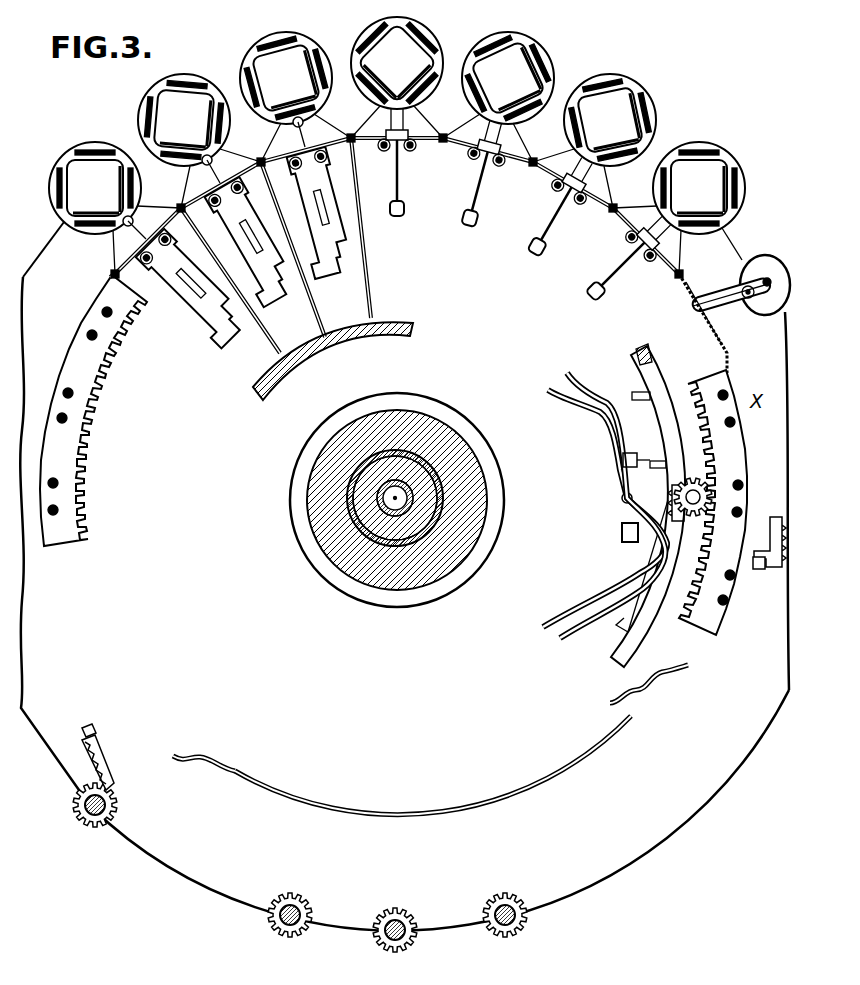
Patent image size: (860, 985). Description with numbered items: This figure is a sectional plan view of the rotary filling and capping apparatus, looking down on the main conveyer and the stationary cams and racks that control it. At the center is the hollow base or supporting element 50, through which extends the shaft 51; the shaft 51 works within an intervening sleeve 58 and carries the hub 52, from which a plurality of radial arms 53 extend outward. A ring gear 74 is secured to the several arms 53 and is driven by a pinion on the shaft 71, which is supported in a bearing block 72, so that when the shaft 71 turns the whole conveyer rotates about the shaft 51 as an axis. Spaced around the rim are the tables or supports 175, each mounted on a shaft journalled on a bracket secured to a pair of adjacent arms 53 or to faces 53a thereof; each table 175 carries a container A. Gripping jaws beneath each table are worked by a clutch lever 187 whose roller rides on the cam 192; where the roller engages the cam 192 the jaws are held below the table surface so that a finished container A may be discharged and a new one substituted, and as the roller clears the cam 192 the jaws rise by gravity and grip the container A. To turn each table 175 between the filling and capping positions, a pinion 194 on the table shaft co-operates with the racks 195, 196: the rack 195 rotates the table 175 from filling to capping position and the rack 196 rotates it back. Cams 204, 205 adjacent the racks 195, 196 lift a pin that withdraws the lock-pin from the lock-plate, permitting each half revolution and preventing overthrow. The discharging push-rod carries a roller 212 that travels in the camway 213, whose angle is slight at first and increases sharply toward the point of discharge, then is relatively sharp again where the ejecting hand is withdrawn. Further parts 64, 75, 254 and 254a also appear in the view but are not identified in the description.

The hollow base or supporting element 50 is at (362, 572).
The shaft 51 is at (378, 515).
The hub 52 is at (397, 320).
The radial arms 53 is at (368, 300).
The faces of the arms 53a is at (260, 162).
The sleeve 58 is at (375, 543).
The shaft 64 is at (385, 497).
The shaft 71 is at (714, 497).
The bearing block 72 is at (621, 538).
The ring gear 74 is at (80, 432).
The pawl 75 is at (698, 522).
The table or support 175 is at (719, 152).
The clutch lever 187 is at (399, 189).
The cam 192 is at (645, 605).
The pinion 194 is at (90, 826).
The rack 195 is at (80, 768).
The rack 196 is at (755, 572).
The cam 204 is at (84, 727).
The cam 205 is at (760, 586).
The roller 212 is at (622, 503).
The camway 213 is at (557, 610).
The guide band 254 is at (418, 812).
The guide end 254a is at (615, 697).
The container A is at (285, 52).